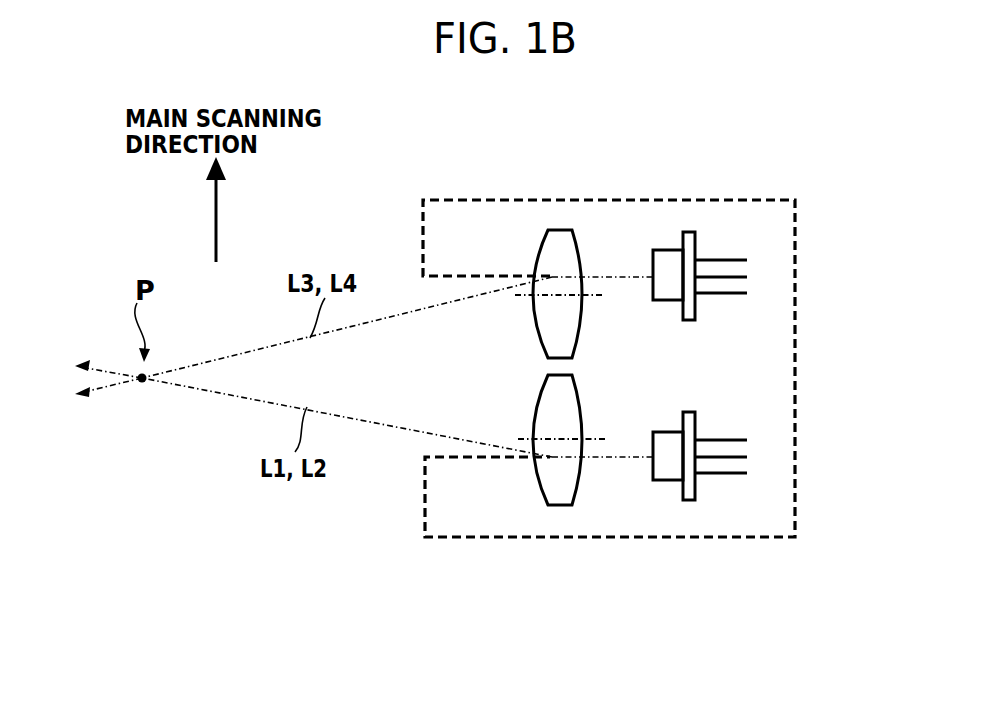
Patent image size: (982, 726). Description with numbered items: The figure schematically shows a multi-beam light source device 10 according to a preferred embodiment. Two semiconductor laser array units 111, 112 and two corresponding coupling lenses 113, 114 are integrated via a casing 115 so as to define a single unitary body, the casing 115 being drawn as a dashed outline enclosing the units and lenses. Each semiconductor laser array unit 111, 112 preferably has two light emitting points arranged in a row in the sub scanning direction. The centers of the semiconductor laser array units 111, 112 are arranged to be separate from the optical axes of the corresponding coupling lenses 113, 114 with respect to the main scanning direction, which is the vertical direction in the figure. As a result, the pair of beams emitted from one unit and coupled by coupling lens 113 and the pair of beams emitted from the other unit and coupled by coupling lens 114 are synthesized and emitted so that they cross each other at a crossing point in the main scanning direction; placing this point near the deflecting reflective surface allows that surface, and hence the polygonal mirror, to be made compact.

The light source unit 10 is at (827, 218).
The semiconductor laser array unit 111 is at (667, 480).
The semiconductor laser array unit 112 is at (667, 250).
The coupling lens 113 is at (573, 480).
The coupling lens 114 is at (568, 245).
The casing 115 is at (797, 300).